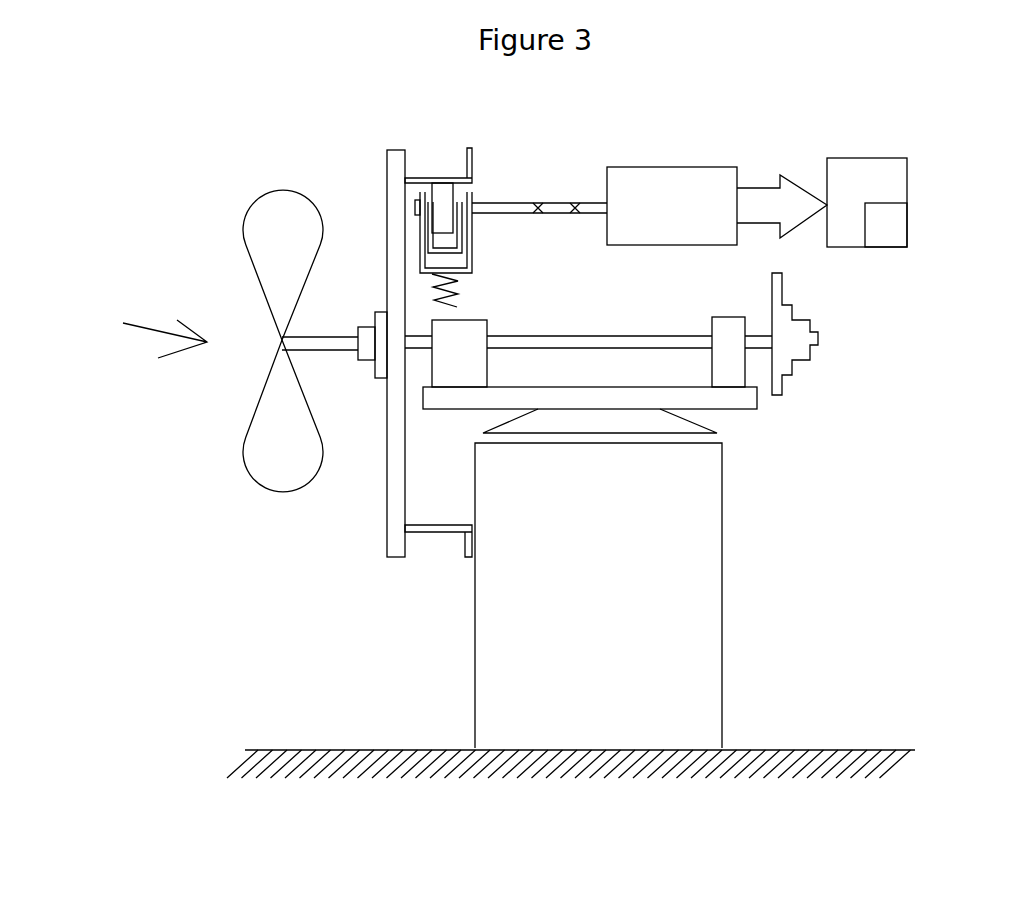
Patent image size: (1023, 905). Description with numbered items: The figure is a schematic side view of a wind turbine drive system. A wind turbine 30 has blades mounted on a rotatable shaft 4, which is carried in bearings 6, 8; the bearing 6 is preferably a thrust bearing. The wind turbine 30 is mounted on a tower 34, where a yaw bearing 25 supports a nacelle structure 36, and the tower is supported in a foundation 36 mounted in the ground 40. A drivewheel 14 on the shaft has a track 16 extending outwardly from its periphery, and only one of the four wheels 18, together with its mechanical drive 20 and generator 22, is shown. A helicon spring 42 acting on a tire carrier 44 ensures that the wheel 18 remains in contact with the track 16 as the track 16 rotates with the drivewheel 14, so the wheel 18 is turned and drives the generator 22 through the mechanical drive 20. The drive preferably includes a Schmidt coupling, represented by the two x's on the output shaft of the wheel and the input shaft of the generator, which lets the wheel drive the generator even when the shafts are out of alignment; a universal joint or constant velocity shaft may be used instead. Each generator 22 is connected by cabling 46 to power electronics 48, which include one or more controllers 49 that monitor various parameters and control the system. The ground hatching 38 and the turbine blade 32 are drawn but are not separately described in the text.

The rotatable shaft 4 is at (616, 334).
The bearing 6 is at (468, 345).
The bearing 8 is at (729, 366).
The drivewheel 14 is at (388, 522).
The track 16 is at (418, 520).
The wheel 18 is at (437, 187).
The mechanical drive 20 is at (512, 204).
The generator 22 is at (663, 182).
The yaw bearing 25 is at (719, 433).
The wind turbine 30 is at (152, 335).
The propeller 32 is at (255, 239).
The tower 34 is at (710, 628).
The nacelle structure 36 is at (737, 403).
The ground surface 38 is at (736, 757).
The ground 40 is at (733, 795).
The helicon spring 42 is at (463, 287).
The tire carrier 44 is at (473, 258).
The cabling 46 is at (786, 203).
The power electronics 48 is at (866, 175).
The controller 49 is at (888, 236).